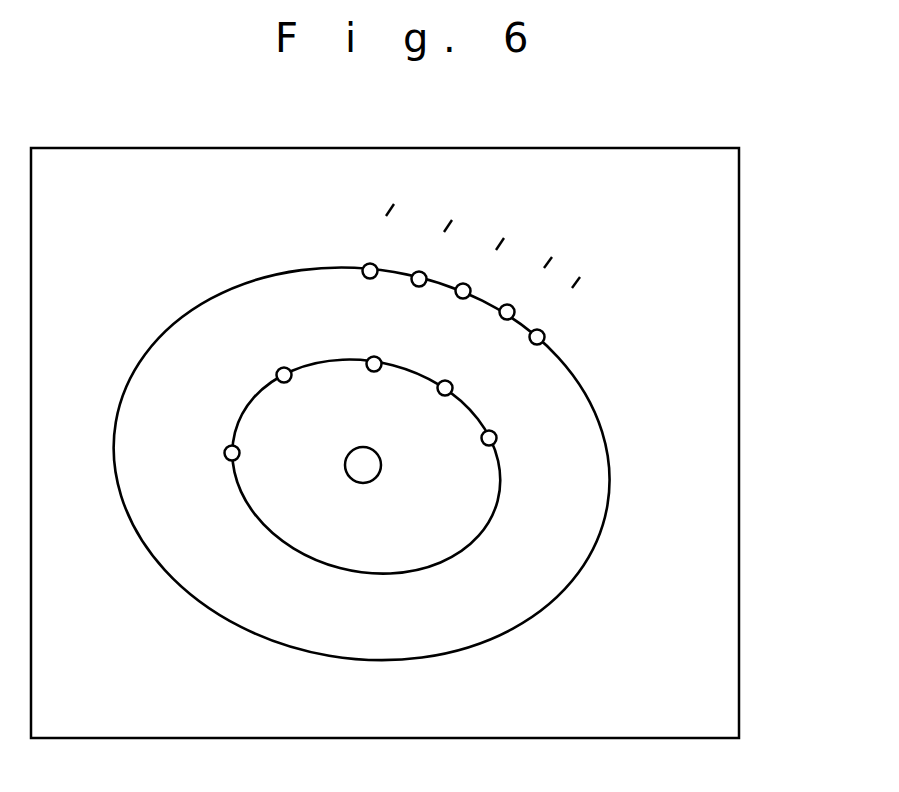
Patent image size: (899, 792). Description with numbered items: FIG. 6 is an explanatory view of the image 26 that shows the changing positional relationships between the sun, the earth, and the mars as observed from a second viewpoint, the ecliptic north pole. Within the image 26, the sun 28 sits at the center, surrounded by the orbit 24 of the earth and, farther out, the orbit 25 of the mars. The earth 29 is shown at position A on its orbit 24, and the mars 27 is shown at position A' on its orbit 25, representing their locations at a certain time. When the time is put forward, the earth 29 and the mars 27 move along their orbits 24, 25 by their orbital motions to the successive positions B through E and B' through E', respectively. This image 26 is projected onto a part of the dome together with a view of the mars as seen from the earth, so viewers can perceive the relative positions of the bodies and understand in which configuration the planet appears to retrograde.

The orbit of the earth 24 is at (482, 533).
The orbit of the mars 25 is at (606, 523).
The image 26 is at (695, 365).
The mars 27 is at (547, 337).
The sun 28 is at (365, 468).
The earth 29 is at (481, 447).